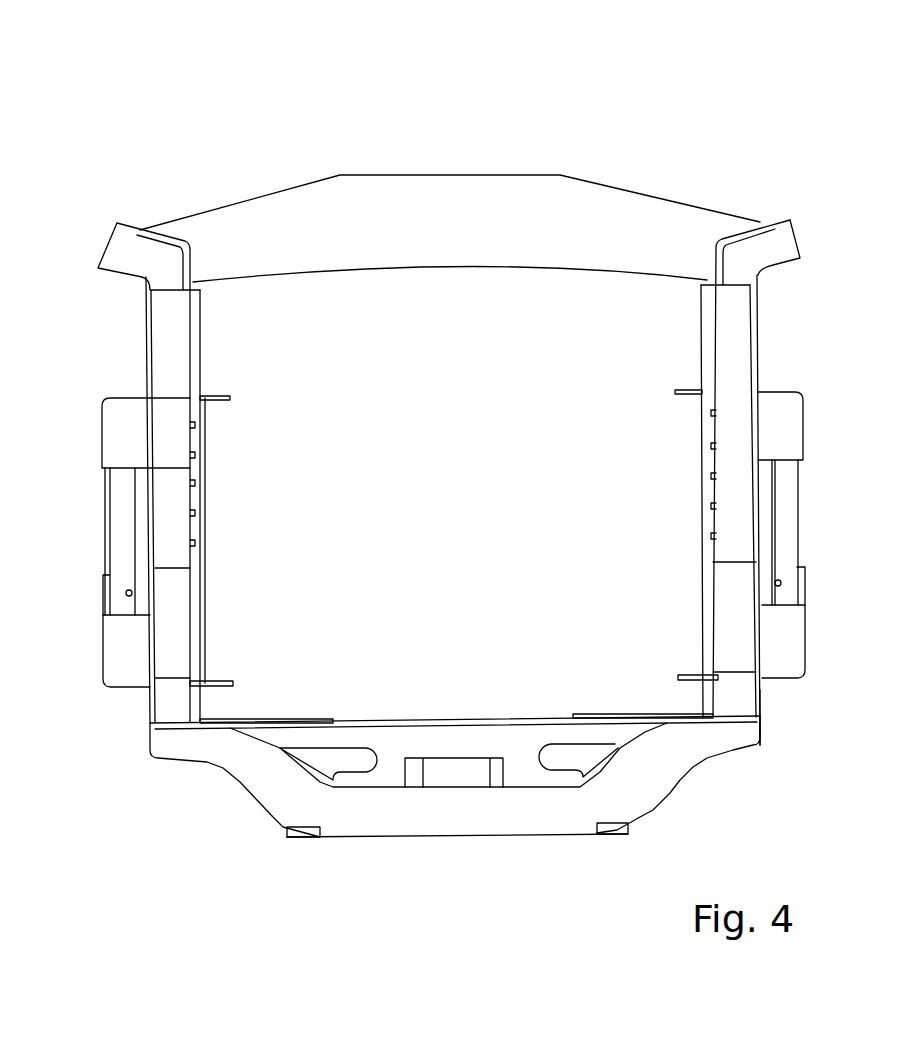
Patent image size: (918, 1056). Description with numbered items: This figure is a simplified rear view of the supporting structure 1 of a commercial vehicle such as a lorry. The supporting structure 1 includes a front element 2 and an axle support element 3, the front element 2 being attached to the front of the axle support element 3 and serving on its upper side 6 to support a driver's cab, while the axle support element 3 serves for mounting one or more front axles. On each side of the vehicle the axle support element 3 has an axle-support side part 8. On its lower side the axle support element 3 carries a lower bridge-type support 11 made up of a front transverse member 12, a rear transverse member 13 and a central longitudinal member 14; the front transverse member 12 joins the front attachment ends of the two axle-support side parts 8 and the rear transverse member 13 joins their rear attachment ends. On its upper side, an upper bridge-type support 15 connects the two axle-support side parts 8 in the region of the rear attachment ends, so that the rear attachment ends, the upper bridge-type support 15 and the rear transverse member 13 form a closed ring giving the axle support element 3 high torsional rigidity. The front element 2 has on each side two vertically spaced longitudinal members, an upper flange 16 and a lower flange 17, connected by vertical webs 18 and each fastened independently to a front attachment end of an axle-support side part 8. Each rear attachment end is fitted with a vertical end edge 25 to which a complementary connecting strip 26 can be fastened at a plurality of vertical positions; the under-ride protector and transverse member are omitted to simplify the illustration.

The supporting structure 1 is at (722, 112).
The front element 2 is at (820, 634).
The axle support element 3 is at (767, 319).
The upper side 6 is at (463, 513).
The axle-support side part 8 is at (150, 710).
The lower bridge-type support 11 is at (397, 728).
The front transverse member 12 is at (428, 737).
The rear transverse member 13 is at (478, 817).
The central longitudinal member 14 is at (465, 765).
The upper bridge-type support 15 is at (433, 214).
The upper flange 16 is at (110, 428).
The lower flange 17 is at (115, 653).
The vertical web 18 is at (120, 533).
The vertical end edge 25 is at (172, 713).
The connecting strip 26 is at (183, 625).